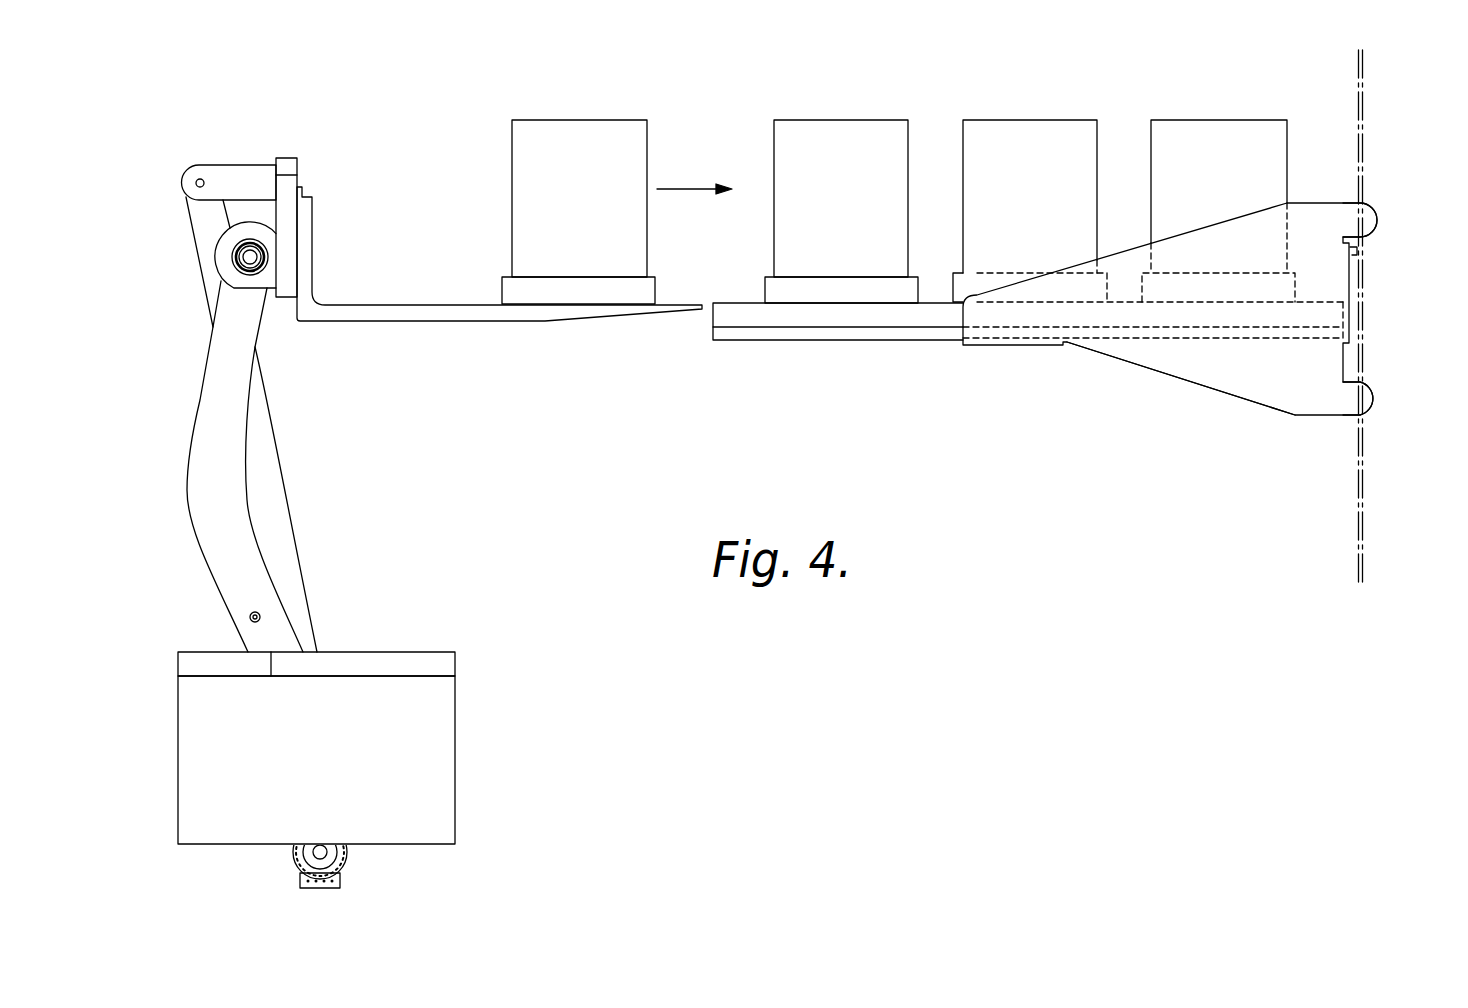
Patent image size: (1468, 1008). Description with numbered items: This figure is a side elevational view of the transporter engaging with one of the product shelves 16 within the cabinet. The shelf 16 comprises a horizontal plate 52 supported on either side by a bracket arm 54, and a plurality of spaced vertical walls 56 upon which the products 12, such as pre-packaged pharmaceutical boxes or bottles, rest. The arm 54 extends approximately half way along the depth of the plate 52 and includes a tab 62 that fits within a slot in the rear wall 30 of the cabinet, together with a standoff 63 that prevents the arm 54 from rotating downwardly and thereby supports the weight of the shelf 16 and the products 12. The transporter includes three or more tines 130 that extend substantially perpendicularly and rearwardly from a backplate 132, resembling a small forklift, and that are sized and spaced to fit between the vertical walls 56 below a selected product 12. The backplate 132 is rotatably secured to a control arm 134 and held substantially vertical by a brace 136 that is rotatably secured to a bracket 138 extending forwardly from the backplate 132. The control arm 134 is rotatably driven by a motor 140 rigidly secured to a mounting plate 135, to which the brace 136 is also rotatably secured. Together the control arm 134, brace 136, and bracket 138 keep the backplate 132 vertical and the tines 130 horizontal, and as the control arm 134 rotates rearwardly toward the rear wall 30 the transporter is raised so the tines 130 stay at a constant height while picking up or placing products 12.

The products 12 is at (615, 183).
The product shelves 16 is at (1078, 380).
The rear wall 30 is at (1365, 130).
The horizontal plate 52 is at (800, 333).
The bracket arm 54 is at (1235, 382).
The vertical walls 56 is at (742, 312).
The tab 62 is at (1377, 217).
The standoff 63 is at (1330, 434).
The tines 130 is at (440, 332).
The backplate 132 is at (289, 158).
The control arm 134 is at (212, 477).
The mounting plate 135 is at (190, 662).
The brace 136 is at (203, 233).
The bracket 138 is at (250, 140).
The motor 140 is at (505, 752).